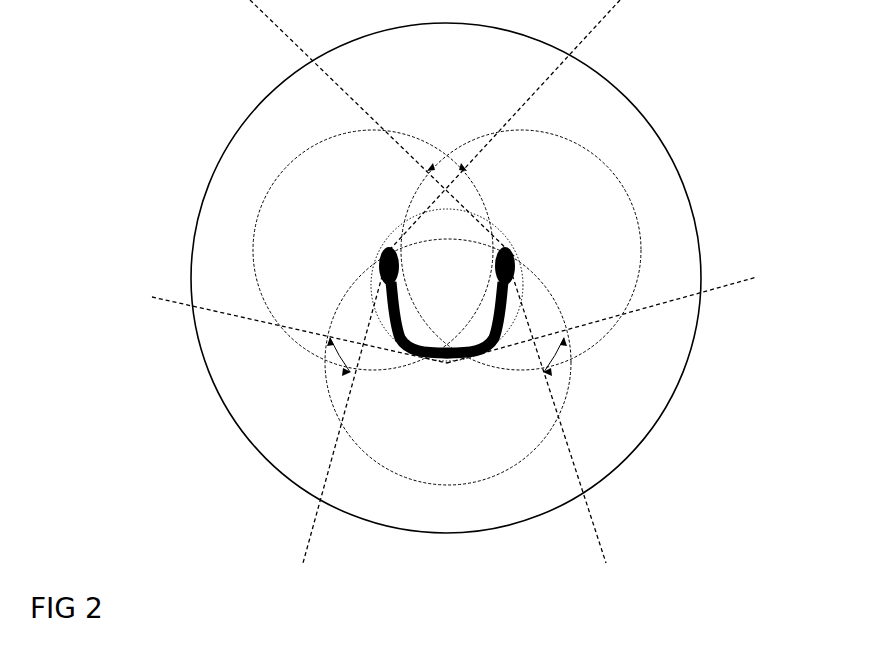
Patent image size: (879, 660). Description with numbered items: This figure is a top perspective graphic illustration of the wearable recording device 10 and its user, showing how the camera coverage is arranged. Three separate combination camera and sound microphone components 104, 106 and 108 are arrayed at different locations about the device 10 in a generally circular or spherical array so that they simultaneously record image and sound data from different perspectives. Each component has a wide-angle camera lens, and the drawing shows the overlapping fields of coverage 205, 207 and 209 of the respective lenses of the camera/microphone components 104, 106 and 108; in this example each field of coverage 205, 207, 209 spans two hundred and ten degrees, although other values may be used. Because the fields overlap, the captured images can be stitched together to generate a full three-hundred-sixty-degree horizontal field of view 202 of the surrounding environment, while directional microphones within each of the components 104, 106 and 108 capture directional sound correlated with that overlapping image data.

The device 10 is at (478, 338).
The combination camera and sound microphone component 104 is at (372, 253).
The combination camera and sound microphone component 106 is at (446, 372).
The combination camera and sound microphone component 108 is at (522, 253).
The full 360 degree horizontal field of view 202 is at (625, 459).
The field of coverage 205 is at (286, 168).
The field of coverage 207 is at (444, 485).
The field of coverage 209 is at (592, 153).